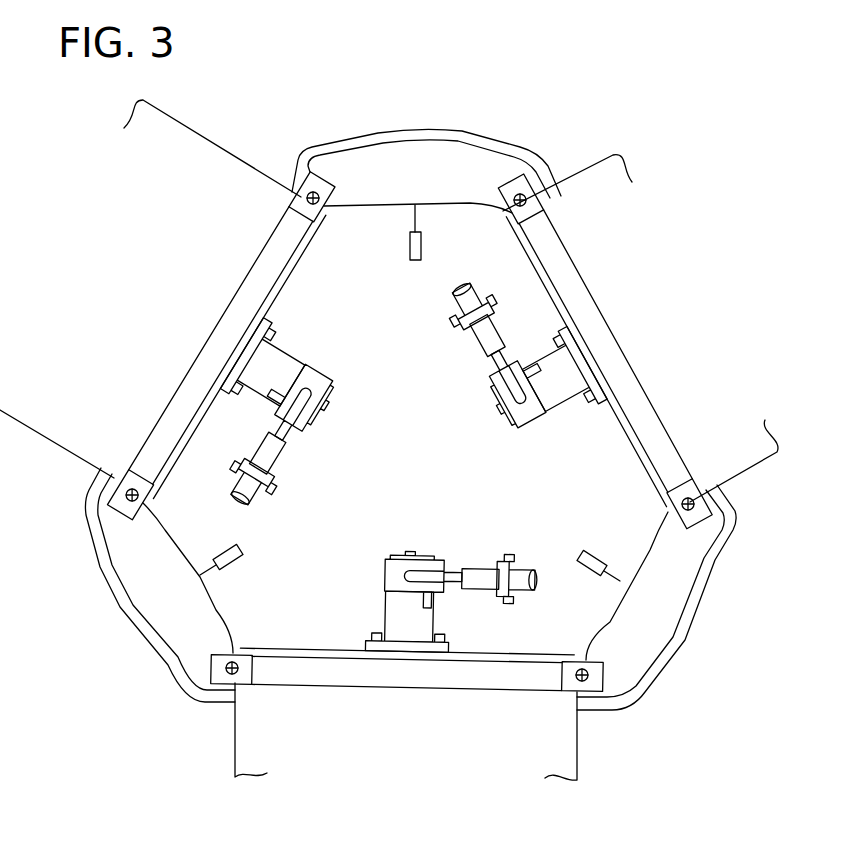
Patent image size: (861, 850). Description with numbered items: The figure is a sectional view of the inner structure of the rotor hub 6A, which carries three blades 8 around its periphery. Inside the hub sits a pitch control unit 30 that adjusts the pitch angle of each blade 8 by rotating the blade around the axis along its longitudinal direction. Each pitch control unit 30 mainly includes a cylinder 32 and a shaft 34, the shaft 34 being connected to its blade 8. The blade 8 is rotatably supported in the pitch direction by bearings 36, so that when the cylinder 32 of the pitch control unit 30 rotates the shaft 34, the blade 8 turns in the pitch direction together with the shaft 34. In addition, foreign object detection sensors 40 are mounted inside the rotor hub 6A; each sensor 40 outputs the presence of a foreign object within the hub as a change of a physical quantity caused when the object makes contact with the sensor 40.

The rotor hub 6A is at (487, 207).
The blade 8 is at (33, 431).
The pitch control unit 30 is at (333, 365).
The cylinder 32 is at (452, 306).
The shaft 34 is at (279, 349).
The bearing 36 is at (297, 207).
The foreign object detection sensor 40 is at (442, 255).